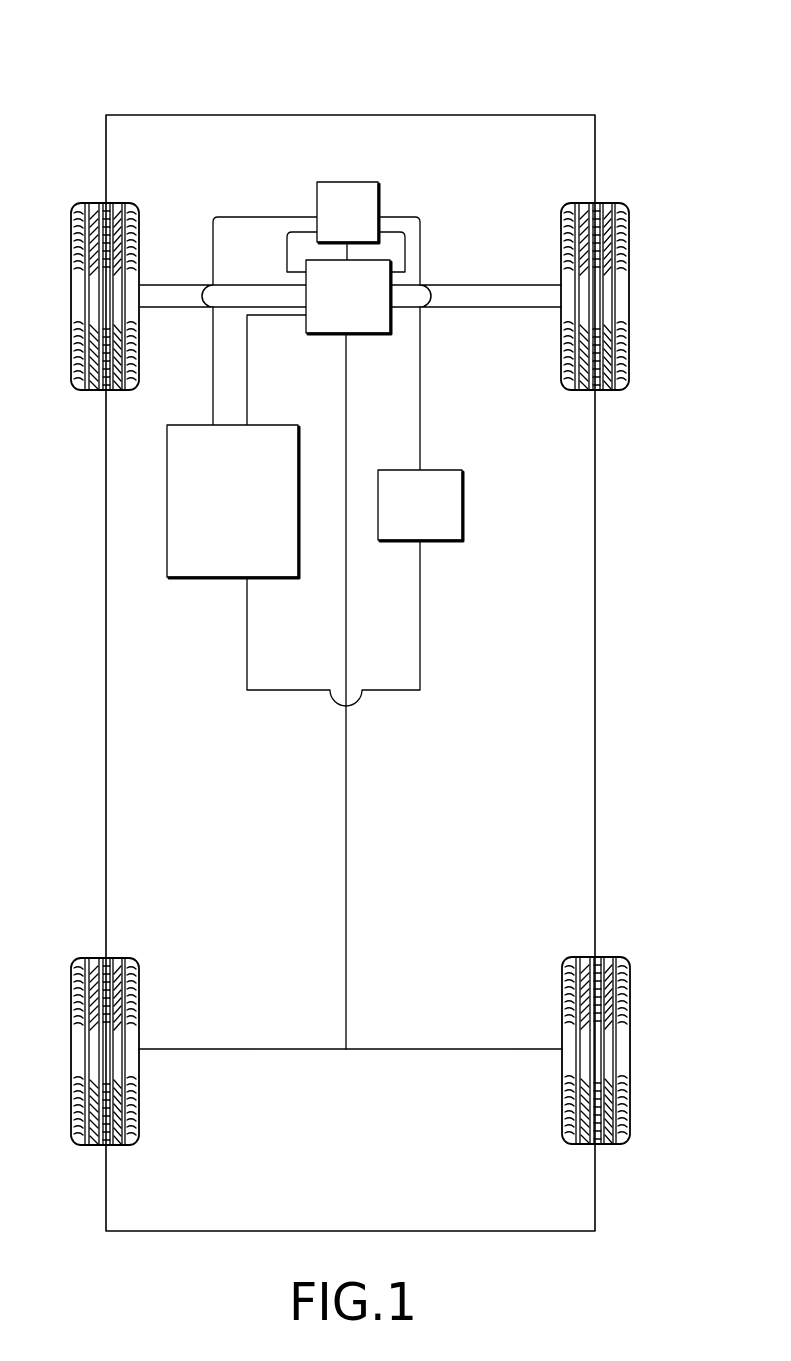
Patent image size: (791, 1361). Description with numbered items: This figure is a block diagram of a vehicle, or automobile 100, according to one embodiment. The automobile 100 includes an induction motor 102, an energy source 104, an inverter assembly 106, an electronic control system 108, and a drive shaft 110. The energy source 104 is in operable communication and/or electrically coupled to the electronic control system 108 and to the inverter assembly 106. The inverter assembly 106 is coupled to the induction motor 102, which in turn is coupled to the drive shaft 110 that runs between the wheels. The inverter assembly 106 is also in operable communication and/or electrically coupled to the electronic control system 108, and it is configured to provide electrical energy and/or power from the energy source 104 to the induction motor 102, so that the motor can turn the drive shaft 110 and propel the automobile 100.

The automobile 100 is at (607, 60).
The induction motor 102 is at (325, 307).
The energy source 104 is at (403, 518).
The inverter assembly 106 is at (325, 224).
The electronic control system 108 is at (209, 518).
The drive shaft 110 is at (194, 285).